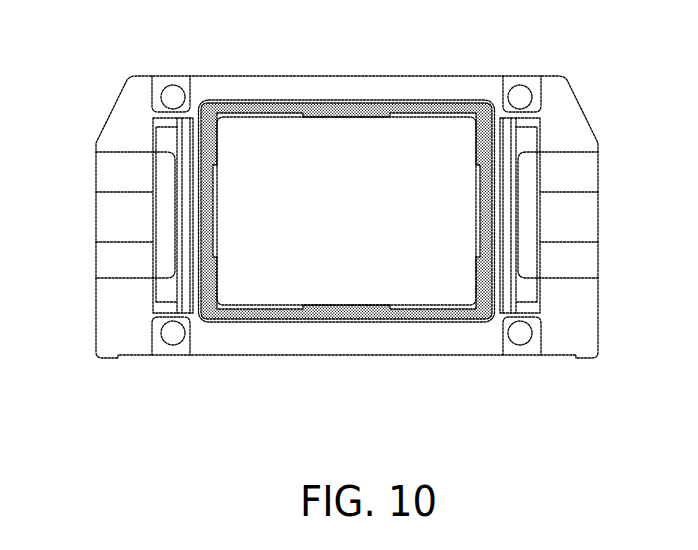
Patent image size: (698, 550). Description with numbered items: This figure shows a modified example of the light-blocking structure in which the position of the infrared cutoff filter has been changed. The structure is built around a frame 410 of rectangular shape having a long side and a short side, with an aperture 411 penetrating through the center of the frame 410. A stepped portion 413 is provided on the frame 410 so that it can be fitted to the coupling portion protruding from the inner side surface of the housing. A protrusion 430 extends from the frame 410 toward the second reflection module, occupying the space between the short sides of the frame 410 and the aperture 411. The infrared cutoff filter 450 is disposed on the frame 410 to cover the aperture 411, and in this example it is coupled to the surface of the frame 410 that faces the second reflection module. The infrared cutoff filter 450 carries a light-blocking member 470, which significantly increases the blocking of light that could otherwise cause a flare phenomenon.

The frame 410 is at (262, 333).
The aperture 411 is at (375, 205).
The stepped portion 413 is at (150, 303).
The protrusion 430 is at (162, 139).
The infrared cutoff filter 450 is at (428, 277).
The light-blocking member 470 is at (428, 103).